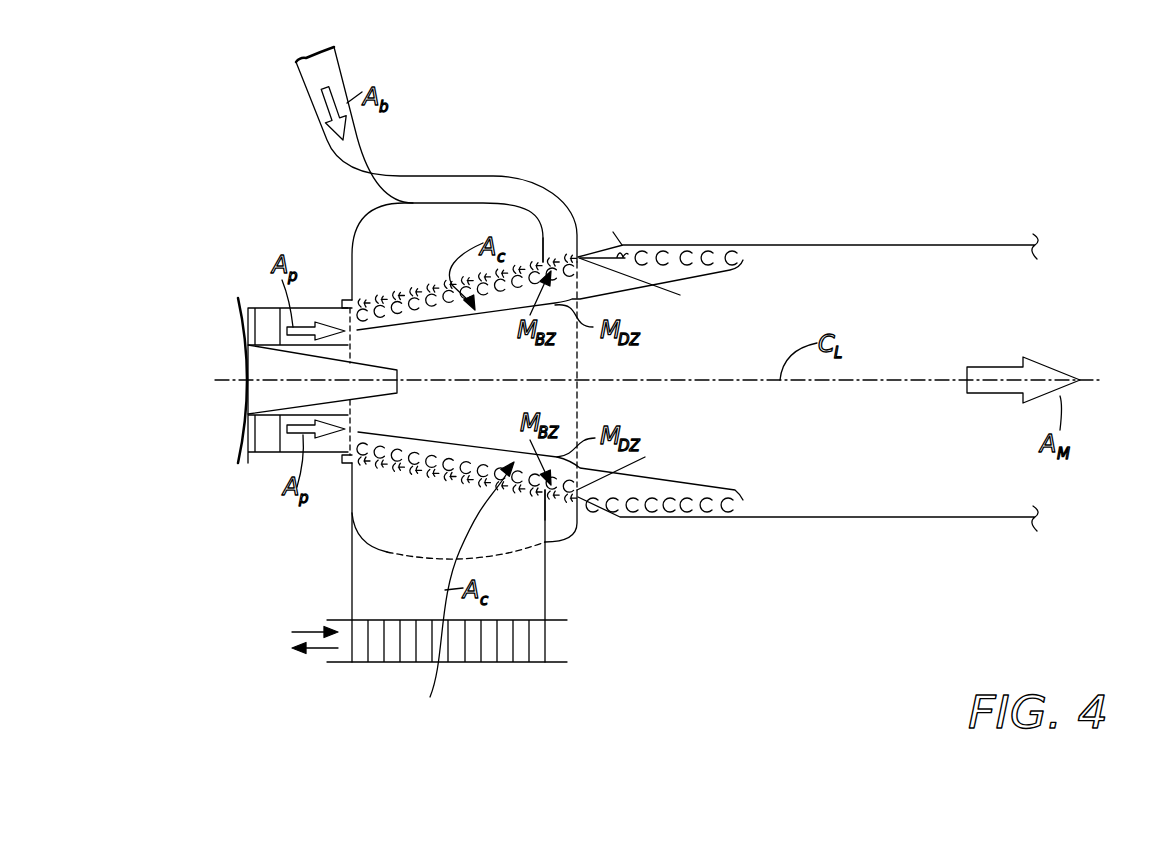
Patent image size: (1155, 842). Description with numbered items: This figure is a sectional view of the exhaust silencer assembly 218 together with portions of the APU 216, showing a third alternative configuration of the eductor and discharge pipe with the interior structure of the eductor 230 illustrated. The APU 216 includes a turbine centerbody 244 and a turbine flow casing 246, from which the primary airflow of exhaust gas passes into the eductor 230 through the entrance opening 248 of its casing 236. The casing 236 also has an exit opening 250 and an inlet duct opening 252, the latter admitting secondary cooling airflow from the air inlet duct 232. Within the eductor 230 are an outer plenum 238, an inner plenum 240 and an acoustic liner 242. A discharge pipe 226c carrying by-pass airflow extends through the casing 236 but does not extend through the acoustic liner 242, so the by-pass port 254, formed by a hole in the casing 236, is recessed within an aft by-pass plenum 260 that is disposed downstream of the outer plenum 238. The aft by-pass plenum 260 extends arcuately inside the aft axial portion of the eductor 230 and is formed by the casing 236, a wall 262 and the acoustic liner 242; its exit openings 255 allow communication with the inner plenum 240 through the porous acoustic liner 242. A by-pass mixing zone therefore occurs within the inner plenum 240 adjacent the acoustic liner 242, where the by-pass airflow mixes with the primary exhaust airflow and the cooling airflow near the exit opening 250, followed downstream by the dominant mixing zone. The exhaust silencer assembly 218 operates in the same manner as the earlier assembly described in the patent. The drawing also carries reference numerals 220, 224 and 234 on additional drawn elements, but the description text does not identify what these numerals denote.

The APU 216 is at (170, 295).
The exhaust silencer assembly 218 is at (688, 172).
The inner combustor wall 220 is at (863, 517).
The compressed air inlet 224 is at (222, 405).
The discharge pipe 226c is at (322, 140).
The eductor 230 is at (312, 251).
The air inlet duct 232 is at (352, 575).
The heat exchanger 234 is at (507, 640).
The casing 236 is at (352, 220).
The outer plenum 238 is at (413, 245).
The inner plenum 240 is at (543, 375).
The acoustic liner 242 is at (433, 277).
The turbine centerbody 244 is at (253, 363).
The turbine flow casing 246 is at (267, 308).
The entrance opening 248 is at (365, 350).
The exit opening 250 is at (592, 396).
The inlet duct opening 252 is at (416, 544).
The by-pass port 254 is at (653, 285).
The exit openings 255 is at (635, 467).
The aft by-pass plenum 260 is at (572, 238).
The wall 262 is at (542, 237).